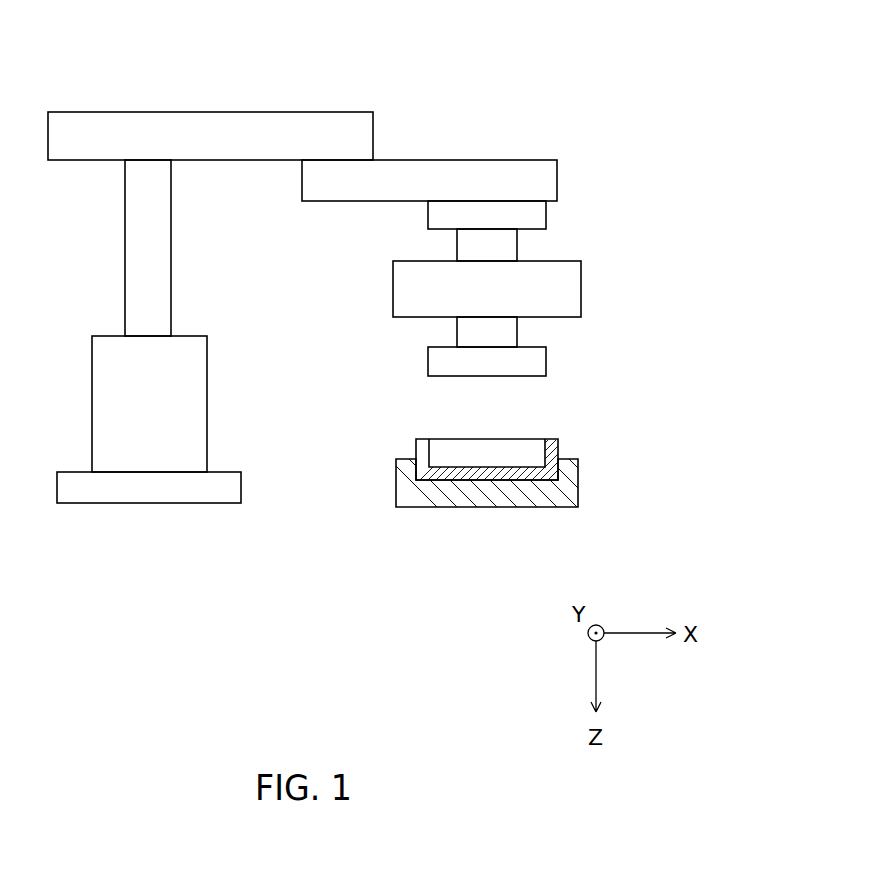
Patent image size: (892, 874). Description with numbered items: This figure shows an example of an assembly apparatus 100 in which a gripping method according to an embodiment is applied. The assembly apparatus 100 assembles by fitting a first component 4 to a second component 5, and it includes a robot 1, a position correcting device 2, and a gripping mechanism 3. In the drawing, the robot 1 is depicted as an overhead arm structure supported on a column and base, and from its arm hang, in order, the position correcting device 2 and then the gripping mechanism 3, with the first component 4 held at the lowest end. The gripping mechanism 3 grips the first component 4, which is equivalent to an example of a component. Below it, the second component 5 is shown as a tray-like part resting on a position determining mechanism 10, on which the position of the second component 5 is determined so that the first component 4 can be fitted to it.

The assembly apparatus 100 is at (552, 80).
The robot 1 is at (271, 112).
The position correcting device 2 is at (517, 249).
The gripping mechanism 3 is at (581, 279).
The first component 4 is at (546, 361).
The second component 5 is at (552, 439).
The position determining mechanism 10 is at (578, 489).